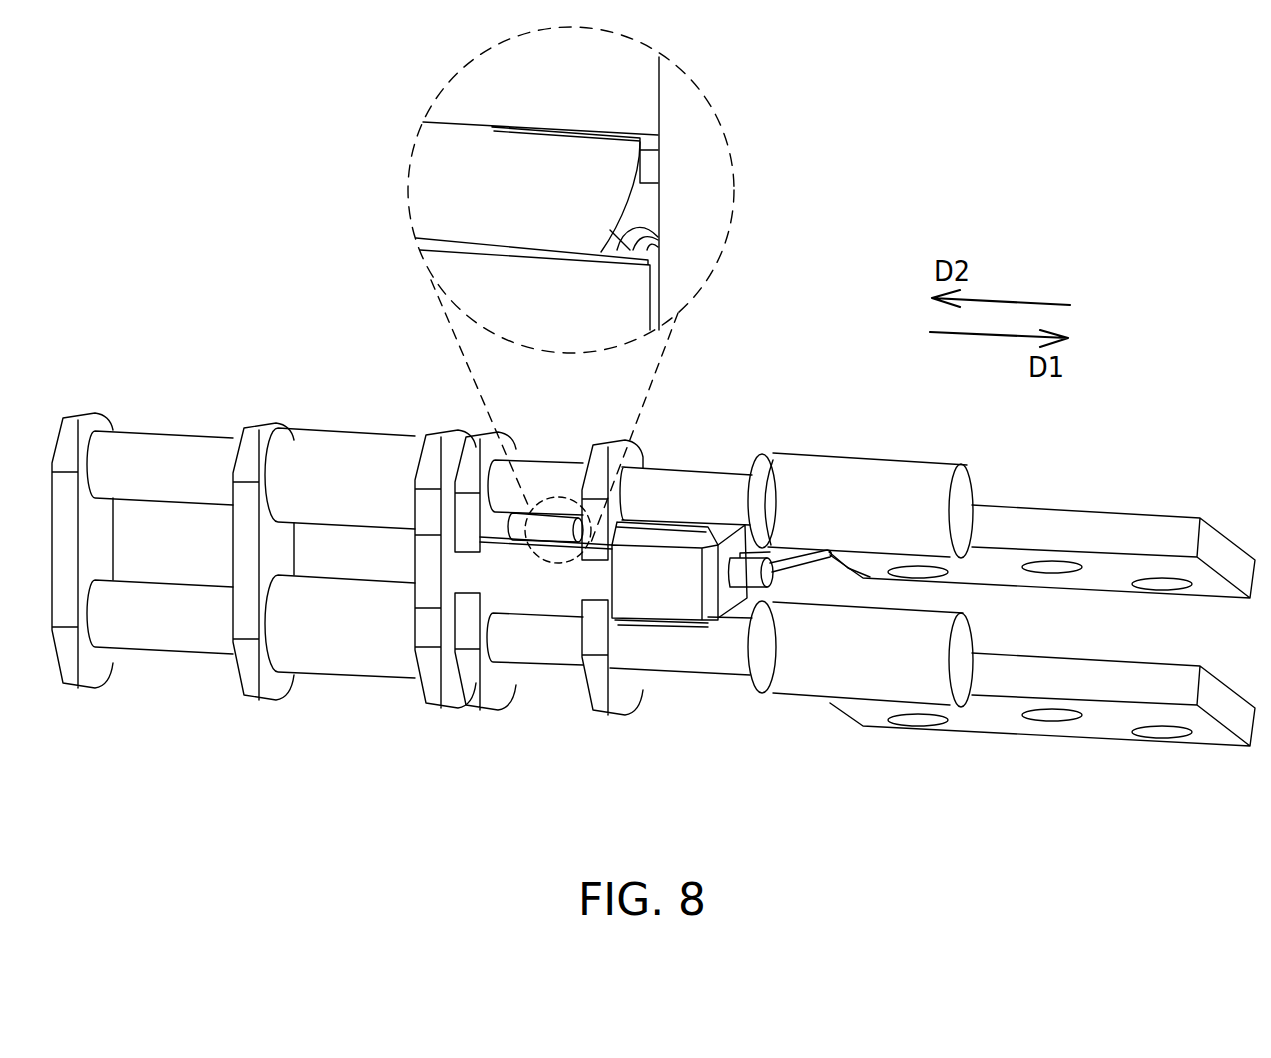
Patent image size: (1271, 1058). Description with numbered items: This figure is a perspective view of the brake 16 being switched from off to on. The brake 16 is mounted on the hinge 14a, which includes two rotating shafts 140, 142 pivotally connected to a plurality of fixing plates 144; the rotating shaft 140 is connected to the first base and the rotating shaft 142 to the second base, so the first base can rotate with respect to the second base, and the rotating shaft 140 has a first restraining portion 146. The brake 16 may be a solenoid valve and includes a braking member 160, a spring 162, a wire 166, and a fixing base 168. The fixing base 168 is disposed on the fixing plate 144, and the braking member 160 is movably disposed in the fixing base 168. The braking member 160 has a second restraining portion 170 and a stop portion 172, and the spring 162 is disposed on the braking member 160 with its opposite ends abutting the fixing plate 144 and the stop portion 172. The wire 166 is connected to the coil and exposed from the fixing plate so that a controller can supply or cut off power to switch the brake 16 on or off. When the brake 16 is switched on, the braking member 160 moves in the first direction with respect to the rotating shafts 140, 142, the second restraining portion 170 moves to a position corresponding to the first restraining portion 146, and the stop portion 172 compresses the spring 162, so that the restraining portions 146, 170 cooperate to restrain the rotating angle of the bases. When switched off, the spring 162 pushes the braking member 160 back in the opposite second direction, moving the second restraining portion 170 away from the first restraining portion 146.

The hinge 14a is at (774, 313).
The brake 16 is at (546, 645).
The rotating shaft 140 is at (725, 468).
The rotating shaft 142 is at (712, 673).
The fixing plate 144 is at (643, 463).
The first restraining portion 146 is at (647, 153).
The braking member 160 is at (750, 578).
The spring 162 is at (620, 232).
The wire 166 is at (847, 567).
The fixing base 168 is at (660, 598).
The second restraining portion 170 is at (592, 158).
The stop portion 172 is at (527, 530).